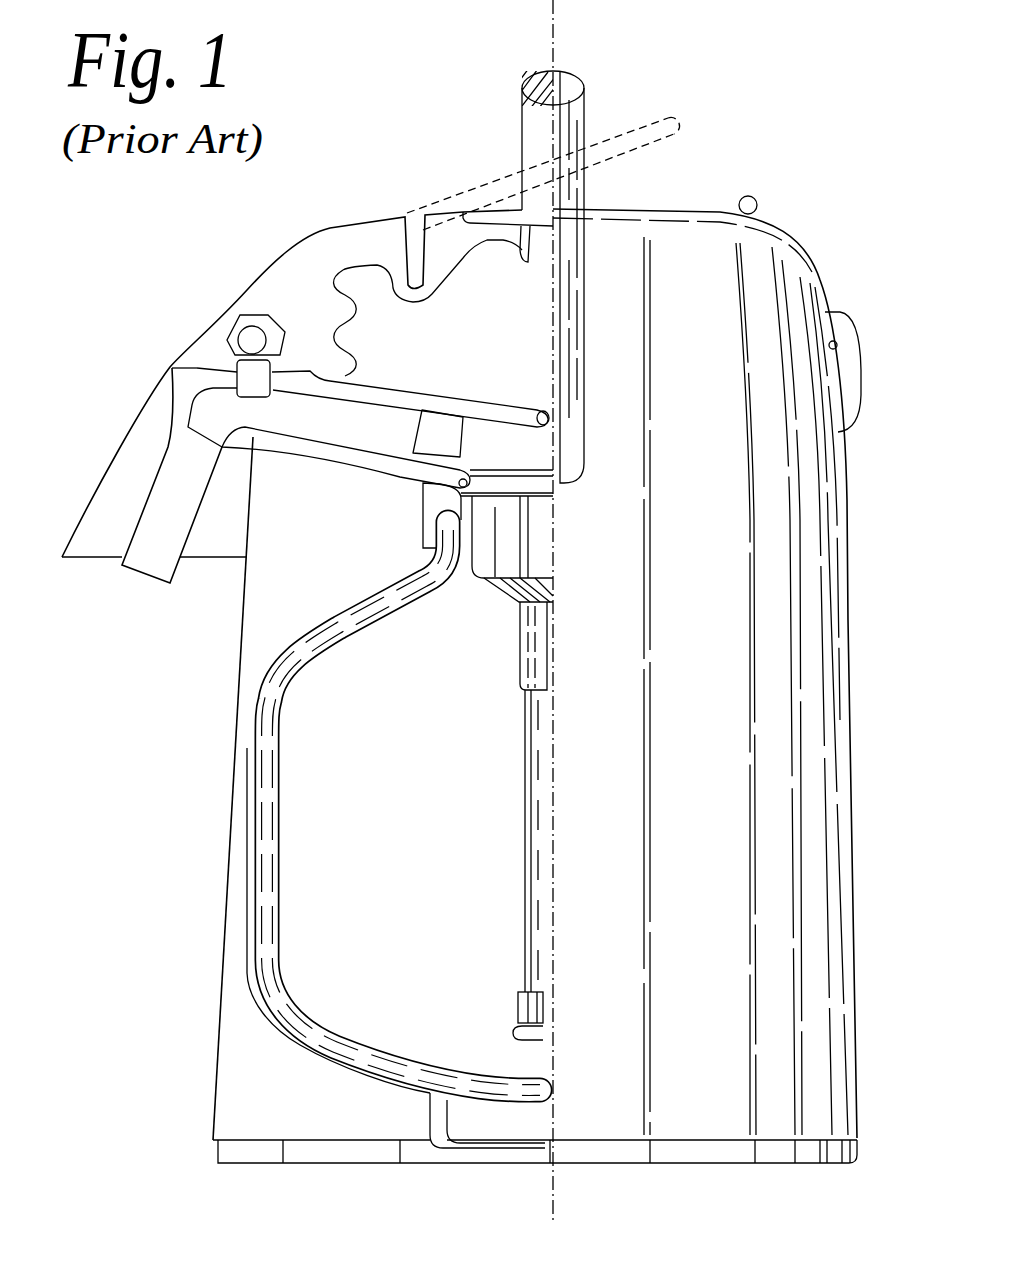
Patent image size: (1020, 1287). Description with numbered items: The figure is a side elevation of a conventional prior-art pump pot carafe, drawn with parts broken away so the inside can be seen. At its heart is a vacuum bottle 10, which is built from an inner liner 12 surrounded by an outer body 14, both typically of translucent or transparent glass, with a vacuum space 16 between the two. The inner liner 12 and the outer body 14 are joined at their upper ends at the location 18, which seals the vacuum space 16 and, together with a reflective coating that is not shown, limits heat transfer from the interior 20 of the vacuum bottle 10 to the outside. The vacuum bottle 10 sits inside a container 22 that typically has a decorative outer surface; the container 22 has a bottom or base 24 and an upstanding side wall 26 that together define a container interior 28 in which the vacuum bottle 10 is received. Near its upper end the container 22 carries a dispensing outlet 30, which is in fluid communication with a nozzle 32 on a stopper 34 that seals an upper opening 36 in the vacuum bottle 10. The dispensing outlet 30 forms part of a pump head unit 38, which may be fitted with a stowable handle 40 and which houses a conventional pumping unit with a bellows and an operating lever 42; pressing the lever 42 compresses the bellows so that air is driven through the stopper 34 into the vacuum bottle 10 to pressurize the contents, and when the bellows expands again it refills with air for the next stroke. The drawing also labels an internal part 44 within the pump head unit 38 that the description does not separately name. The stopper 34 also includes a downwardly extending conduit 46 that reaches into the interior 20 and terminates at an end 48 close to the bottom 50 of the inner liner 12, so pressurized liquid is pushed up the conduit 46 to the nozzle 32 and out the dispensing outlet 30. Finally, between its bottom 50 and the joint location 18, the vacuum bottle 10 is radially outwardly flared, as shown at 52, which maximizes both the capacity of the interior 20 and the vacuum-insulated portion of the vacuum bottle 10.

The vacuum bottle 10 is at (270, 667).
The inner liner 12 is at (357, 633).
The outer body 14 is at (330, 620).
The vacuum space 16 is at (276, 752).
The joint of inner liner and outer body 18 is at (460, 512).
The interior of the vacuum bottle 20 is at (398, 872).
The container 22 is at (220, 934).
The base 24 is at (228, 1153).
The side wall 26 is at (232, 833).
The container interior 28 is at (268, 1109).
The dispensing outlet 30 is at (145, 580).
The nozzle 32 is at (352, 420).
The stopper 34 is at (535, 542).
The upper opening 36 is at (470, 519).
The pump head unit 38 is at (808, 254).
The stowable handle 40 is at (567, 80).
The operating lever 42 is at (690, 125).
The nut and spring 44 is at (345, 303).
The conduit 46 is at (530, 786).
The end of conduit 48 is at (535, 1040).
The bottom of the inner liner 50 is at (468, 1067).
The radially outwardly flared portion 52 is at (288, 830).